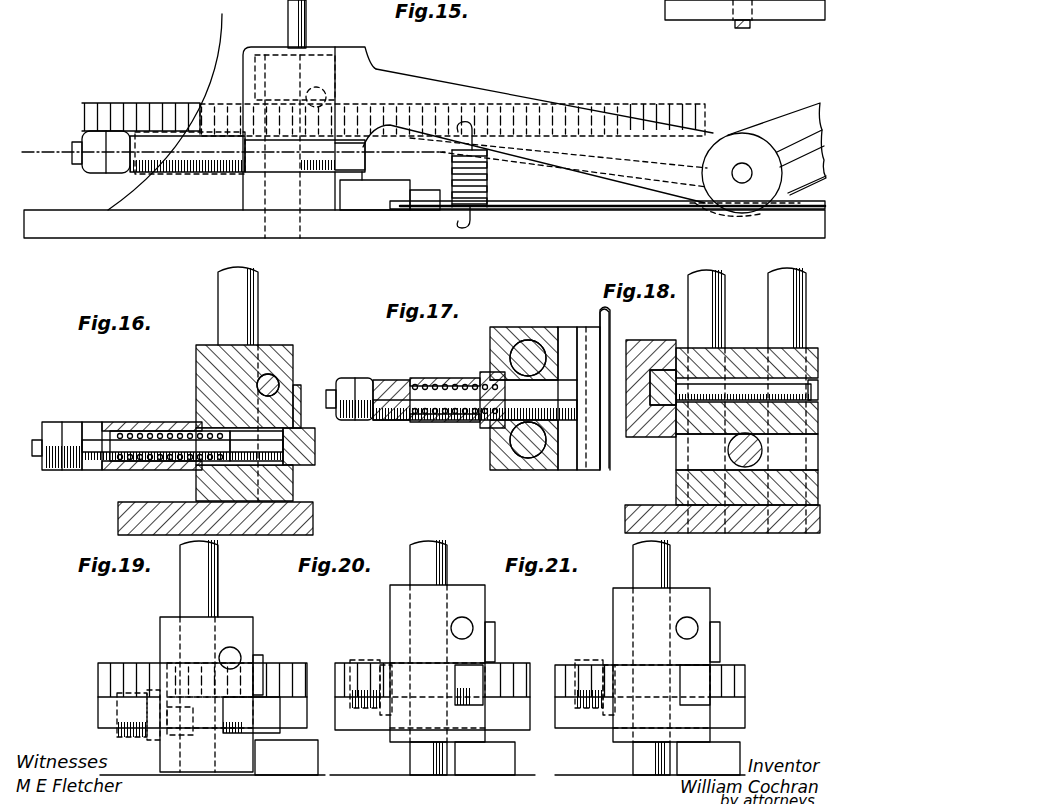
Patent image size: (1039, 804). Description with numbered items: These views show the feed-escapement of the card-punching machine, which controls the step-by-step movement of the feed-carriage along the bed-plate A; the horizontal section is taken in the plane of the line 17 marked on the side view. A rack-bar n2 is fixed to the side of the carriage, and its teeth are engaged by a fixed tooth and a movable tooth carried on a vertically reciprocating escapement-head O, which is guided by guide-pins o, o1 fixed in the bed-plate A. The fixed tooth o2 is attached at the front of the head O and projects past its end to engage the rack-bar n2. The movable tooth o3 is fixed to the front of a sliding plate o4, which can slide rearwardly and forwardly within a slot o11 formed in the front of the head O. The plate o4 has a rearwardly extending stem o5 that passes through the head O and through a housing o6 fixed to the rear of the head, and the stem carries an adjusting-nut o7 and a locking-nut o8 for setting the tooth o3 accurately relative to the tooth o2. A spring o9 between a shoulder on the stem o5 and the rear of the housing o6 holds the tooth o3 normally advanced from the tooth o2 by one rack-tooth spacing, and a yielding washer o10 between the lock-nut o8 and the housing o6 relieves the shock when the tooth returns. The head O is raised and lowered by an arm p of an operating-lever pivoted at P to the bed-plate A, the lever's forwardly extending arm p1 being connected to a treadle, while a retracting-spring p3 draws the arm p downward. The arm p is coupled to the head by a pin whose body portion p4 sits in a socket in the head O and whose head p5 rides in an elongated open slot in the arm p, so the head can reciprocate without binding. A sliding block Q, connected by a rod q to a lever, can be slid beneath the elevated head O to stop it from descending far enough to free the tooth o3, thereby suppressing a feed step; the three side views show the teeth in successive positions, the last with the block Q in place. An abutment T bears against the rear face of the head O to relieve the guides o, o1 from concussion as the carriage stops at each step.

In FIG. 15, the bed-plate A is at (492, 228).
In FIG. 15, the rod q is at (574, 208).
In FIG. 15, the sliding block Q is at (385, 200).
In FIG. 19, the sliding block Q is at (286, 757).
In FIG. 20, the sliding block Q is at (485, 758).
In FIG. 21, the sliding block Q is at (708, 758).
In FIG. 15, the abutment T is at (221, 15).
In FIG. 15, the rack-bar n2 is at (614, 112).
In FIG. 19, the rack-bar n2 is at (130, 663).
In FIG. 20, the rack-bar n2 is at (345, 665).
In FIG. 21, the rack-bar n2 is at (570, 668).
In FIG. 15, the guide-pin o is at (308, 24).
In FIG. 16, the guide-pin o is at (246, 300).
In FIG. 18, the guide-pin o is at (712, 298).
In FIG. 19, the guide-pin o is at (199, 578).
In FIG. 20, the guide-pin o is at (428, 657).
In FIG. 21, the guide-pin o is at (651, 657).
In FIG. 15, the escapement-head O is at (254, 192).
In FIG. 16, the escapement-head O is at (197, 379).
In FIG. 17, the escapement-head O is at (502, 470).
In FIG. 18, the escapement-head O is at (736, 348).
In FIG. 19, the escapement-head O is at (238, 622).
In FIG. 20, the escapement-head O is at (398, 602).
In FIG. 21, the escapement-head O is at (626, 592).
In FIG. 15, the guide-pin o1 is at (798, 262).
In FIG. 18, the guide-pin o1 is at (796, 275).
In FIG. 15, the fixed tooth o2 is at (348, 108).
In FIG. 16, the fixed tooth o2 is at (298, 394).
In FIG. 19, the fixed tooth o2 is at (262, 658).
In FIG. 20, the fixed tooth o2 is at (478, 637).
In FIG. 21, the fixed tooth o2 is at (718, 636).
In FIG. 15, the movable tooth o3 is at (362, 178).
In FIG. 16, the movable tooth o3 is at (316, 466).
In FIG. 17, the movable tooth o3 is at (611, 316).
In FIG. 18, the movable tooth o3 is at (611, 318).
In FIG. 17, the sliding plate o4 is at (586, 330).
In FIG. 15, the stem o5 is at (155, 140).
In FIG. 16, the stem o5 is at (136, 436).
In FIG. 17, the stem o5 is at (436, 386).
In FIG. 16, the housing o6 is at (112, 470).
In FIG. 17, the housing o6 is at (452, 424).
In FIG. 16, the adjusting-nut o7 is at (52, 424).
In FIG. 17, the adjusting-nut o7 is at (345, 380).
In FIG. 16, the locking-nut o8 is at (70, 424).
In FIG. 17, the locking-nut o8 is at (365, 380).
In FIG. 16, the spring o9 is at (160, 462).
In FIG. 17, the spring o9 is at (428, 424).
In FIG. 17, the washer o10 is at (380, 422).
In FIG. 17, the slot o11 is at (565, 330).
In FIG. 18, the slot o11 is at (764, 450).
In FIG. 15, the bolt 17 is at (231, 152).
In FIG. 15, the arm of operating-lever p is at (460, 92).
In FIG. 15, the forwardly-extending arm p1 is at (792, 120).
In FIG. 15, the retracting-spring p3 is at (488, 188).
In FIG. 16, the body portion of pin p4 is at (272, 376).
In FIG. 18, the body portion of pin p4 is at (712, 390).
In FIG. 18, the head of pin p5 is at (655, 330).
In FIG. 15, the pivot P is at (742, 165).